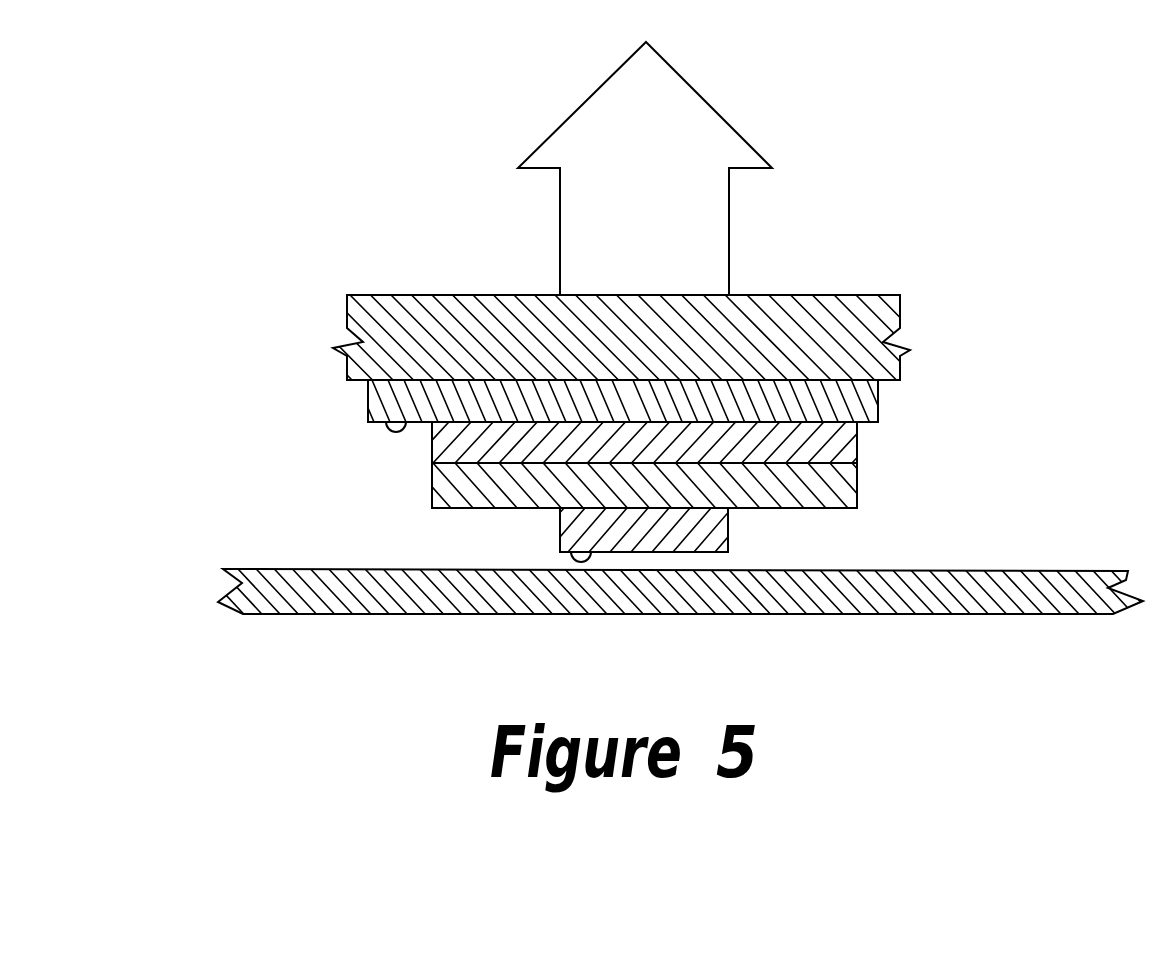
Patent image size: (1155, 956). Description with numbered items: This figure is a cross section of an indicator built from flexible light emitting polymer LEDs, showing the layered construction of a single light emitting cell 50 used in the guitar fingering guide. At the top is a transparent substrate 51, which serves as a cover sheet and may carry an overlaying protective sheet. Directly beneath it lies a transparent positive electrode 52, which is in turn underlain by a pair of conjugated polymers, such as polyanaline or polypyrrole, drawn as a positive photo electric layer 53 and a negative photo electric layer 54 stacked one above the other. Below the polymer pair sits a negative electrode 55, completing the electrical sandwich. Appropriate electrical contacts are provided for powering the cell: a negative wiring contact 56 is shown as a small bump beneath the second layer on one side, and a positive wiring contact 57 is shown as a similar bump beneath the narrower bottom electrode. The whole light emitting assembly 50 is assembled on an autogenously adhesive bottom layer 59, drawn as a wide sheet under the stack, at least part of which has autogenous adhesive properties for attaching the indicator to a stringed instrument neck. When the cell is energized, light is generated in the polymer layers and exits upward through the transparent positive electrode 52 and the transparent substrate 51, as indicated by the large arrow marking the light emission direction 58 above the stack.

The light emitting cell 50 is at (427, 95).
The transparent substrate 51 is at (900, 318).
The transparent positive electrode 52 is at (878, 406).
The positive photo electric layer 53 is at (857, 448).
The negative photo electric layer 54 is at (857, 505).
The negative electrode 55 is at (728, 540).
The negative wiring contact 56 is at (390, 428).
The positive wiring contact 57 is at (571, 553).
The light emission direction 58 is at (732, 205).
The autogenously adhesive bottom layer 59 is at (962, 614).